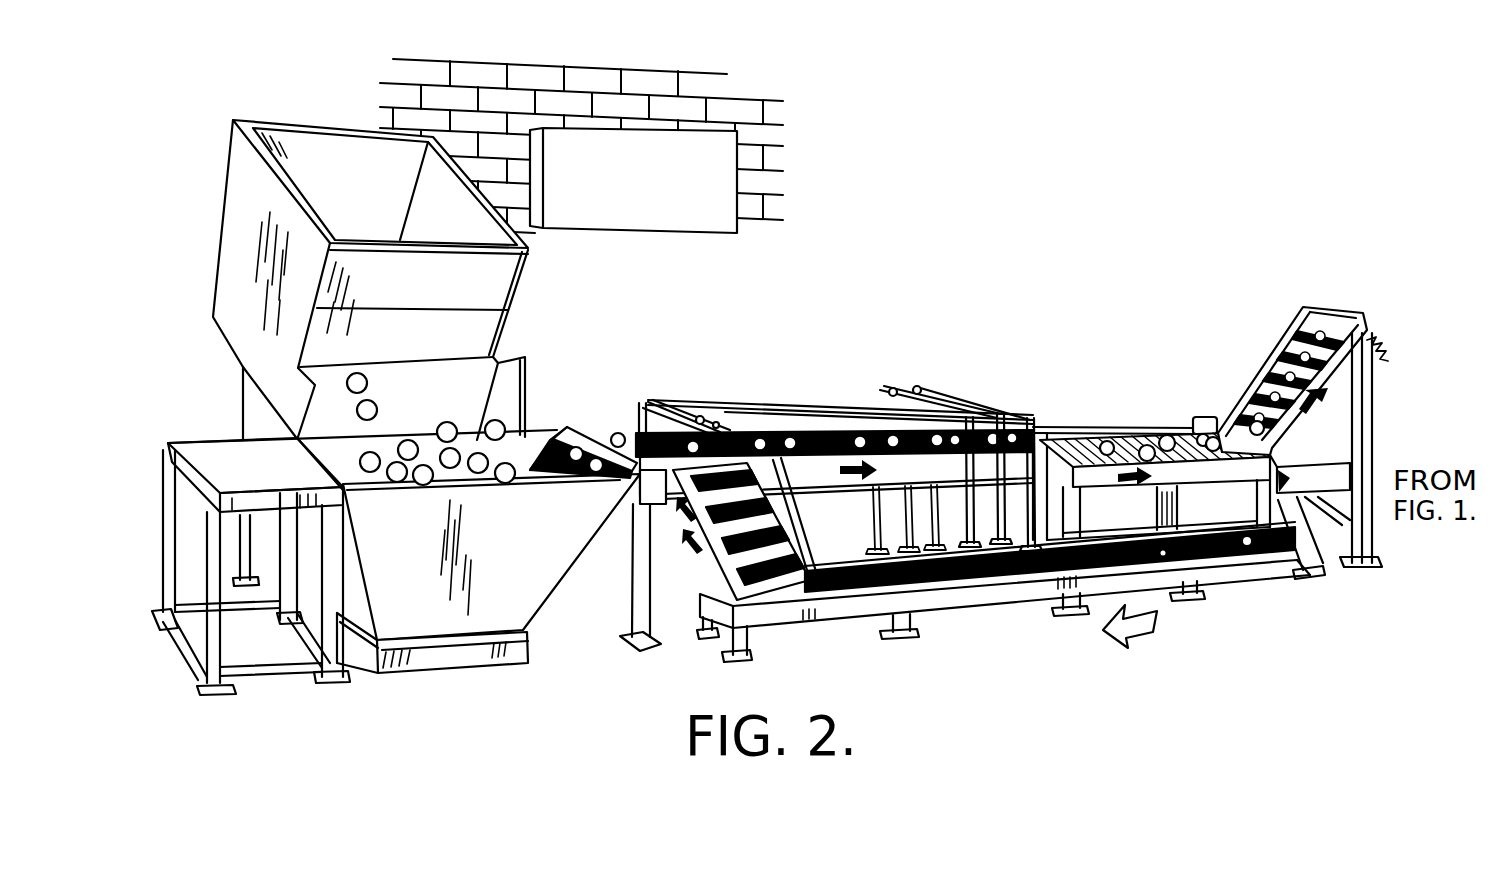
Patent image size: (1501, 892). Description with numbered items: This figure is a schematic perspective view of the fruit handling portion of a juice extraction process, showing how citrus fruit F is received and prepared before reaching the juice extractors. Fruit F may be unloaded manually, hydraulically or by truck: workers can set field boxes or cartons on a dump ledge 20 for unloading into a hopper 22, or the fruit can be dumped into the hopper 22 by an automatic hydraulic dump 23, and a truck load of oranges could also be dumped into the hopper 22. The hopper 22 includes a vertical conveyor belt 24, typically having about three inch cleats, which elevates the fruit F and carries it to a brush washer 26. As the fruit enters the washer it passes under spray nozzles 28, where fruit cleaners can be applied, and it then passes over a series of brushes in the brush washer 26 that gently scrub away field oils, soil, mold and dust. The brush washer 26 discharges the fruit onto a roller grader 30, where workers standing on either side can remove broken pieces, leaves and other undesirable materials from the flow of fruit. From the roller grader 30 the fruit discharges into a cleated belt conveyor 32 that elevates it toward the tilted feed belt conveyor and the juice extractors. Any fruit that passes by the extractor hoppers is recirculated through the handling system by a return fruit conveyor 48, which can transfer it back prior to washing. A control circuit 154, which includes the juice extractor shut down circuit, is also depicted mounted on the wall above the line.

The dump ledge 20 is at (180, 440).
The hopper 22 is at (437, 660).
The automatic hydraulic dump 23 is at (293, 120).
The vertical conveyor belt 24 is at (587, 438).
The fruit F is at (618, 432).
The brush washer 26 is at (828, 432).
The spray nozzles 28 is at (697, 403).
The roller grader 30 is at (1093, 427).
The cleated belt conveyor 32 is at (1267, 353).
The return fruit conveyor 48 is at (1022, 590).
The control circuit 154 is at (737, 220).